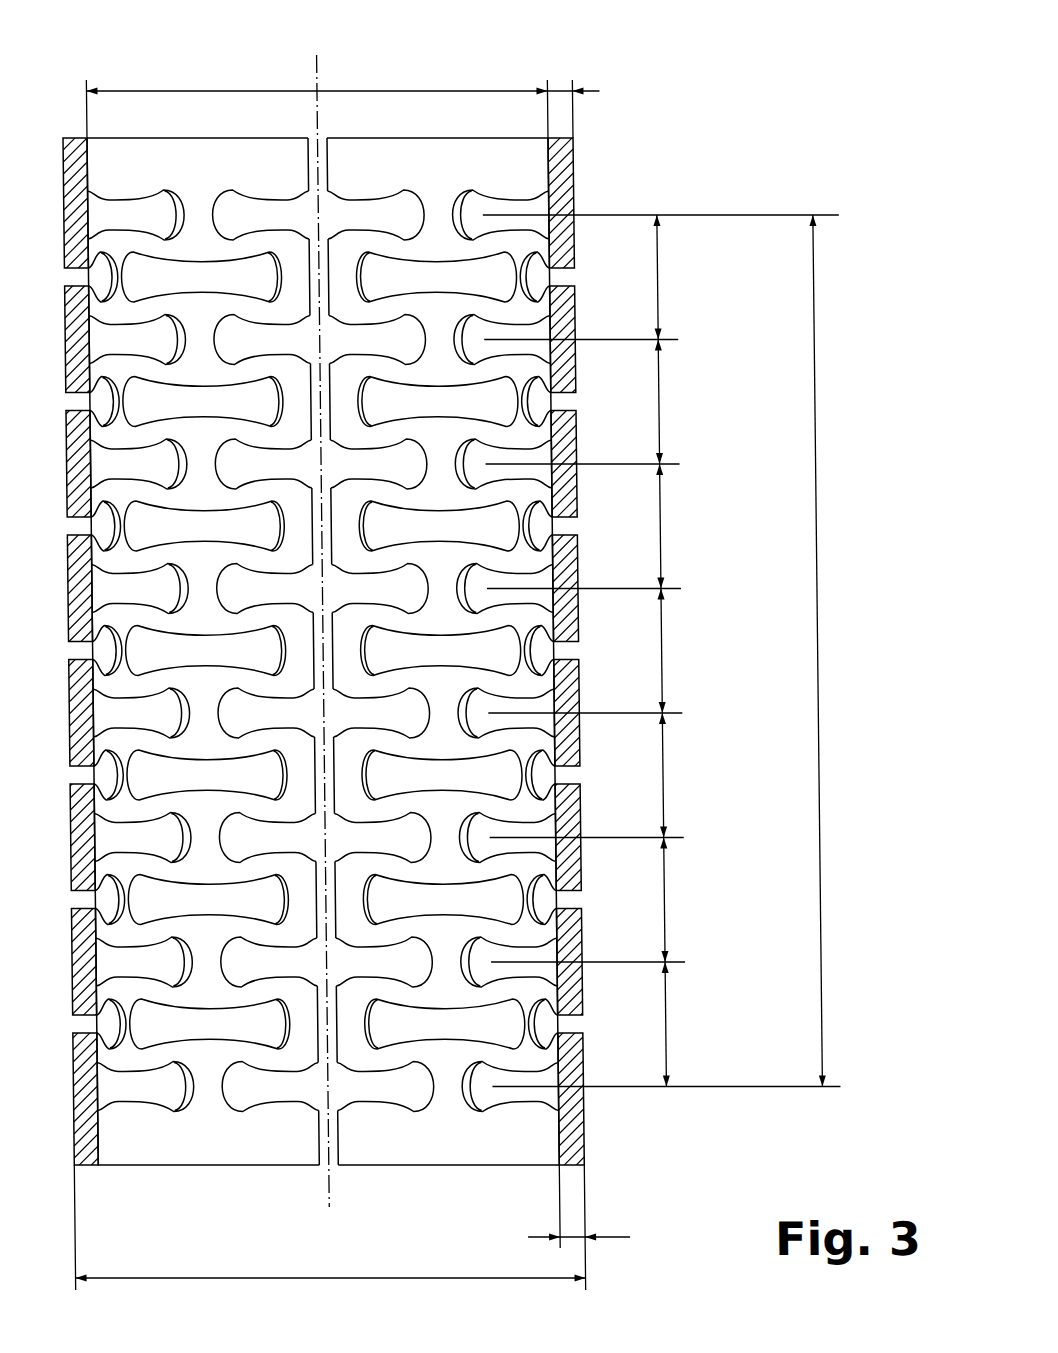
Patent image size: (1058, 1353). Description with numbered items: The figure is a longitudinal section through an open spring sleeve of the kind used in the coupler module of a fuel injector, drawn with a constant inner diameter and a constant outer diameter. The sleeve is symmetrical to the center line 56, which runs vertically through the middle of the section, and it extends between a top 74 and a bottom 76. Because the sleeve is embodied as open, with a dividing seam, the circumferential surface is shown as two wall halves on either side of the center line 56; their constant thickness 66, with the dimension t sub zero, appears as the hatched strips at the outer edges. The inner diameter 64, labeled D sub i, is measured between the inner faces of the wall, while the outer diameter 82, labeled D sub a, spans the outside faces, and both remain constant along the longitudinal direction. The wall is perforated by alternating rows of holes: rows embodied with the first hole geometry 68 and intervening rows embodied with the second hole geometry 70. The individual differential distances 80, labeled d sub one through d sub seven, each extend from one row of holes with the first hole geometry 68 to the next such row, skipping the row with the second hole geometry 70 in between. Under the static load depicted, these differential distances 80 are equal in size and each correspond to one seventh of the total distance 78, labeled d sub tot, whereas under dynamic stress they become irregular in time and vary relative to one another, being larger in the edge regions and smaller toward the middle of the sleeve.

The center line 56 is at (318, 68).
The inner diameter 64 is at (303, 90).
The thickness of the circumferential surface 66 is at (561, 90).
The first hole geometry 68 is at (478, 465).
The second hole geometry 70 is at (399, 527).
The top 74 is at (381, 139).
The bottom 76 is at (221, 1182).
The total distance 78 is at (812, 625).
The differential distances 80 is at (656, 278).
The outer diameter 82 is at (326, 1277).